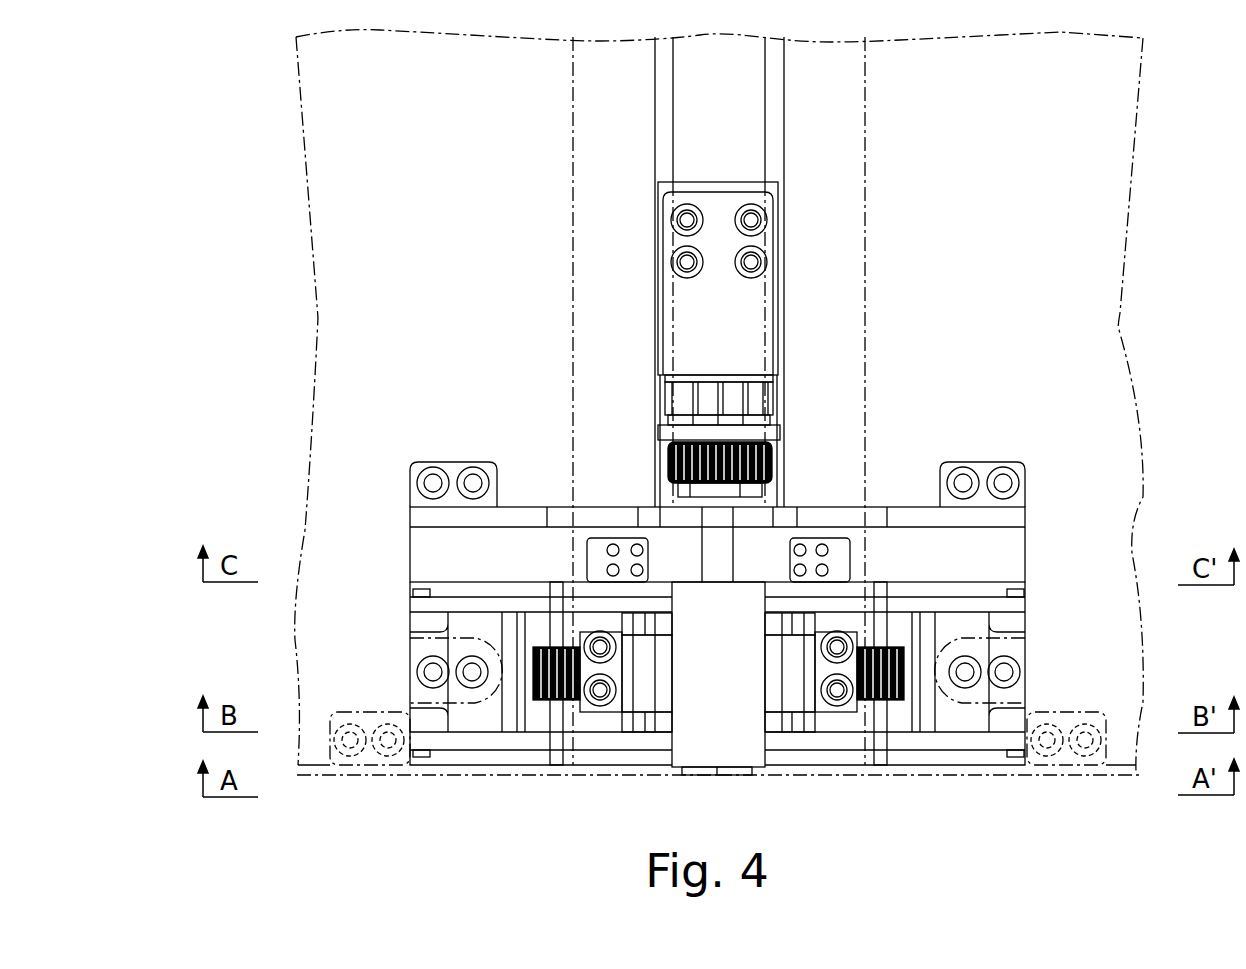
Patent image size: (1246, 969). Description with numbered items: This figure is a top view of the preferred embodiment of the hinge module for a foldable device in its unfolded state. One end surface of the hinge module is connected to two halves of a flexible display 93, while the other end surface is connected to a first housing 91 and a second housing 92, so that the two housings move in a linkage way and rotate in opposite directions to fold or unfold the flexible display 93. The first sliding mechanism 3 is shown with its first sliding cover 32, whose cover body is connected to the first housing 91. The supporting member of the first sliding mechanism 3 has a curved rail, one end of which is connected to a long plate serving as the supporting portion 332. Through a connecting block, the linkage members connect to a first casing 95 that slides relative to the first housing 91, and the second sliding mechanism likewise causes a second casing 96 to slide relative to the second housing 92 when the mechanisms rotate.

The first sliding mechanism 3 is at (766, 478).
The first sliding cover 32 is at (1032, 552).
The supporting portion 332 is at (842, 326).
The flexible display 93 is at (1078, 210).
The first housing 91 is at (1060, 777).
The second housing 92 is at (377, 777).
The first casing 95 is at (825, 777).
The second casing 96 is at (608, 777).